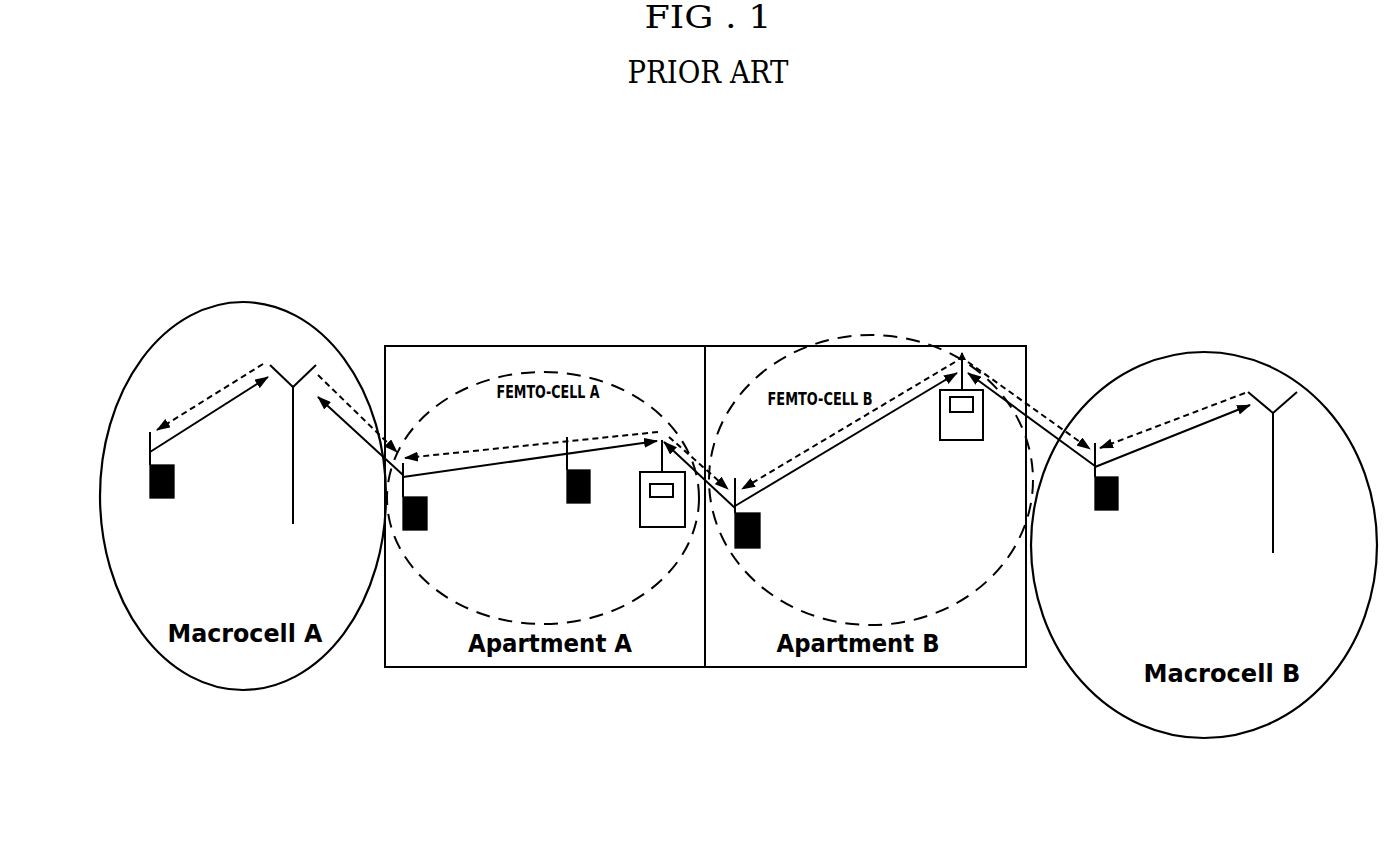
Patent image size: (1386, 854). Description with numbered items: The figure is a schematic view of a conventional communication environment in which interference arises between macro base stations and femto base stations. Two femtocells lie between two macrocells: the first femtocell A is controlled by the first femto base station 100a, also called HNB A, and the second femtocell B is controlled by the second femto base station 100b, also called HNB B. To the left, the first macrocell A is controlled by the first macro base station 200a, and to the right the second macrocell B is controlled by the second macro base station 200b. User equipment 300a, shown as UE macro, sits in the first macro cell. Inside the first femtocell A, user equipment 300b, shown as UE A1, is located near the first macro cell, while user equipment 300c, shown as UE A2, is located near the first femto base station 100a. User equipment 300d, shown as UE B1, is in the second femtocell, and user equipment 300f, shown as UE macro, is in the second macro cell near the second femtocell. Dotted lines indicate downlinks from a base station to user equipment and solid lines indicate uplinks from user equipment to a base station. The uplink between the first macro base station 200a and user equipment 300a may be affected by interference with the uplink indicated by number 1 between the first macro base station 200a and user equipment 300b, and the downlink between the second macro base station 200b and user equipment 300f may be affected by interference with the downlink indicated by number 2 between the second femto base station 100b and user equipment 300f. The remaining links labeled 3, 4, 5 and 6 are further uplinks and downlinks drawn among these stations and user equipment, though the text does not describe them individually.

The uplink between first macro base station and user equipment 1 is at (240, 418).
The downlink between second femto base station and user equipment 2 is at (1031, 414).
The link between UE B1 and HNB B 3 is at (869, 434).
The link between NB Macro A and UE A1 4 is at (360, 425).
The link between UE A1 and HNB A 5 is at (552, 477).
The link between UE B1 and HNB A 6 is at (705, 472).
The first femto base station 100a is at (678, 527).
The second femto base station 100b is at (978, 440).
The first macro base station 200a is at (293, 518).
The second macro base station 200b is at (1273, 497).
The user equipment 300a is at (150, 481).
The user equipment 300b is at (427, 520).
The user equipment 300c is at (567, 490).
The user equipment 300d is at (760, 532).
The user equipment 300f is at (1118, 492).